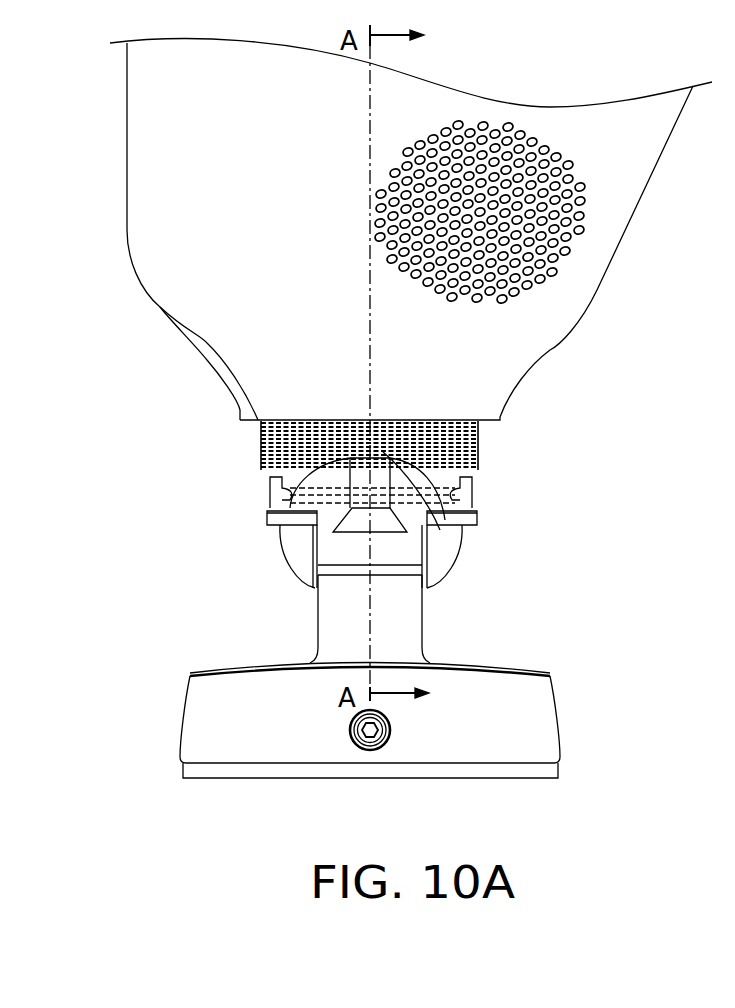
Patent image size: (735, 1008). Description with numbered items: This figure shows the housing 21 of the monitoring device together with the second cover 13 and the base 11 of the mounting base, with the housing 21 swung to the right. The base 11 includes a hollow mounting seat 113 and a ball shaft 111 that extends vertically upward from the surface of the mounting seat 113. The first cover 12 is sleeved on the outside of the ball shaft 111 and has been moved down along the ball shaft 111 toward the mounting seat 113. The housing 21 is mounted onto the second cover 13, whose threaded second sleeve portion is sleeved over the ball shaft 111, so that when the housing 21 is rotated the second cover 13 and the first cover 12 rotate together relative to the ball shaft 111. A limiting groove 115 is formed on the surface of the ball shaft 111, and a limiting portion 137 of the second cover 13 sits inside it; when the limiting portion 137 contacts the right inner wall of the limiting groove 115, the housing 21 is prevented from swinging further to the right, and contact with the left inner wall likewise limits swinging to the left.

The housing 21 is at (617, 222).
The second cover 13 is at (480, 446).
The limiting portion 137 is at (398, 478).
The limiting groove 115 is at (425, 531).
The ball shaft 111 is at (327, 543).
The first cover 12 is at (445, 553).
The base 11 is at (227, 662).
The mounting seat 113 is at (523, 670).